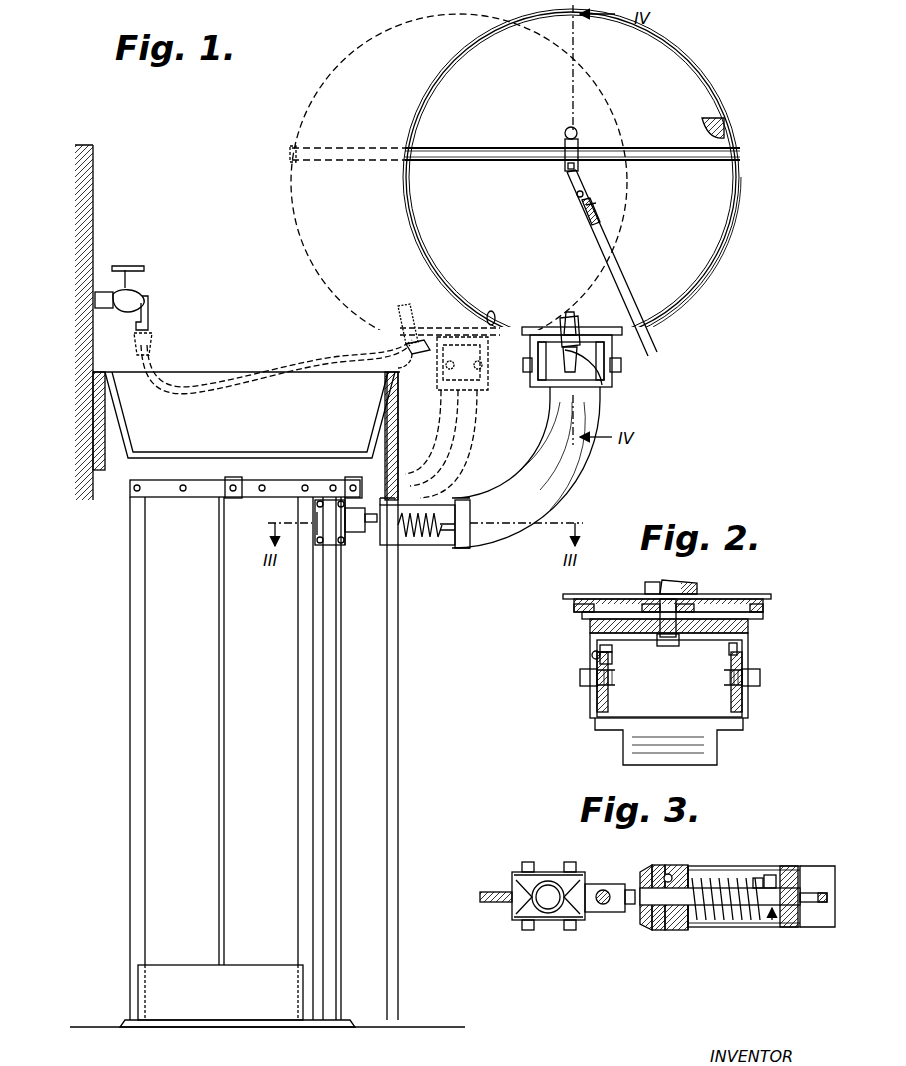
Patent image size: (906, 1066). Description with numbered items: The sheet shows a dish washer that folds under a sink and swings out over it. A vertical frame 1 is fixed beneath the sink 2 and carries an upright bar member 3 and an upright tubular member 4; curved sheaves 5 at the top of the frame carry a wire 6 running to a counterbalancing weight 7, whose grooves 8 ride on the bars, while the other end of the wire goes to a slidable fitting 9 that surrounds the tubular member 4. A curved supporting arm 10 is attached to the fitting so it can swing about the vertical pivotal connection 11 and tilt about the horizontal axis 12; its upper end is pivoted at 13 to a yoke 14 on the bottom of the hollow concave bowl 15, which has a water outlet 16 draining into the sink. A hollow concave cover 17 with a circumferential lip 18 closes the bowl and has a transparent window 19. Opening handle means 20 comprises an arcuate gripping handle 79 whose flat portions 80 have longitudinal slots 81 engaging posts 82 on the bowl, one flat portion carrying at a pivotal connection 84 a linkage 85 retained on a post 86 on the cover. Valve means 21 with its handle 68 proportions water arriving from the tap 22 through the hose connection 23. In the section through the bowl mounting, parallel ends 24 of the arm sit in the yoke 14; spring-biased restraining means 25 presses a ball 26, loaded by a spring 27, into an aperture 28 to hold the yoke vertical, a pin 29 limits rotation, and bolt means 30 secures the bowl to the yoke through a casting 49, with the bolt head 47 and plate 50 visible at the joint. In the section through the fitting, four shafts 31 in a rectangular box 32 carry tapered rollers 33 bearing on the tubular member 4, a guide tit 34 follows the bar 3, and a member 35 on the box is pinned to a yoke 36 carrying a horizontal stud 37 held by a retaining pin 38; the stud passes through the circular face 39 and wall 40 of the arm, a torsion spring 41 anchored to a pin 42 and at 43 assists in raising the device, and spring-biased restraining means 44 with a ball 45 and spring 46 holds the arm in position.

In FIG. 1, the vertical frame 1 is at (124, 672).
In FIG. 1, the sink 2 is at (242, 405).
In FIG. 1, the vertical upright bar member 3 is at (300, 758).
In FIG. 3, the vertical upright bar member 3 is at (478, 896).
In FIG. 1, the vertical upright tubular member 4 is at (336, 740).
In FIG. 3, the vertical upright tubular member 4 is at (550, 880).
In FIG. 1, the curved sheaves 5 is at (355, 480).
In FIG. 1, the wire 6 is at (224, 690).
In FIG. 1, the counterbalancing weight 7 is at (256, 965).
In FIG. 1, the vertical groove 8 is at (138, 1000).
In FIG. 1, the slidable fitting 9 is at (342, 548).
In FIG. 3, the slidable fitting 9 is at (515, 940).
In FIG. 1, the curved supporting arm 10 is at (478, 439).
In FIG. 2, the curved supporting arm 10 is at (716, 752).
In FIG. 3, the curved supporting arm 10 is at (812, 922).
In FIG. 1, the vertical pivotal connection 11 is at (382, 505).
In FIG. 3, the vertical pivotal connection 11 is at (605, 884).
In FIG. 1, the horizontal axis 12 is at (470, 530).
In FIG. 3, the horizontal axis 12 is at (774, 922).
In FIG. 1, the pivotal attachment 13 is at (524, 366).
In FIG. 2, the pivotal attachment 13 is at (582, 682).
In FIG. 1, the yoke 14 is at (616, 358).
In FIG. 2, the yoke 14 is at (750, 652).
In FIG. 1, the hollow concave bowl 15 is at (712, 250).
In FIG. 2, the hollow concave bowl 15 is at (745, 594).
In FIG. 1, the water outlet 16 is at (488, 312).
In FIG. 1, the hollow concave cover 17 is at (300, 110).
In FIG. 1, the circumferential lip 18 is at (742, 154).
In FIG. 1, the transparent window 19 is at (726, 128).
In FIG. 1, the opening handle means 20 is at (560, 205).
In FIG. 1, the valve means 21 is at (398, 337).
In FIG. 1, the tap 22 is at (136, 290).
In FIG. 1, the hose connection 23 is at (302, 366).
In FIG. 1, the parallel ends 24 is at (536, 352).
In FIG. 2, the parallel ends 24 is at (608, 700).
In FIG. 2, the spring-biased restraining means 25 is at (585, 652).
In FIG. 2, the ball 26 is at (612, 649).
In FIG. 2, the spring 27 is at (612, 660).
In FIG. 2, the aperture 28 is at (592, 657).
In FIG. 2, the pin 29 is at (729, 646).
In FIG. 2, the bolt means 30 is at (697, 586).
In FIG. 1, the pivot pins or shafts 31 is at (322, 500).
In FIG. 3, the pivot pins or shafts 31 is at (528, 862).
In FIG. 1, the rectangular box 32 is at (320, 535).
In FIG. 3, the rectangular box 32 is at (514, 912).
In FIG. 3, the tapered rollers or sheaves 33 is at (515, 880).
In FIG. 1, the guide tit 34 is at (316, 504).
In FIG. 1, the member 35 is at (356, 532).
In FIG. 3, the member 35 is at (604, 912).
In FIG. 1, the yoke 36 is at (372, 522).
In FIG. 3, the yoke 36 is at (630, 906).
In FIG. 1, the horizontal stud 37 is at (462, 548).
In FIG. 3, the horizontal stud 37 is at (738, 866).
In FIG. 3, the retaining pin 38 is at (646, 930).
In FIG. 3, the circular face 39 is at (678, 930).
In FIG. 3, the wall 40 is at (795, 866).
In FIG. 1, the torsion spring 41 is at (428, 540).
In FIG. 3, the torsion spring 41 is at (748, 922).
In FIG. 3, the pin 42 is at (770, 875).
In FIG. 3, the spring attachment 43 is at (700, 927).
In FIG. 3, the spring-biased restraining means 44 is at (692, 866).
In FIG. 3, the ball 45 is at (666, 874).
In FIG. 3, the spring 46 is at (684, 865).
In FIG. 2, the bolt head 47 is at (655, 582).
In FIG. 1, the casting 49 is at (530, 326).
In FIG. 2, the casting 49 is at (750, 623).
In FIG. 2, the spacer plate 50 is at (755, 607).
In FIG. 1, the handle 68 is at (575, 318).
In FIG. 1, the arcuate gripping handle 79 is at (622, 276).
In FIG. 1, the flat portion 80 is at (600, 212).
In FIG. 1, the longitudinal slot 81 is at (584, 214).
In FIG. 1, the post 82 is at (584, 194).
In FIG. 1, the pivotal connection 84 is at (566, 176).
In FIG. 1, the linkage 85 is at (563, 166).
In FIG. 1, the post 86 is at (565, 132).